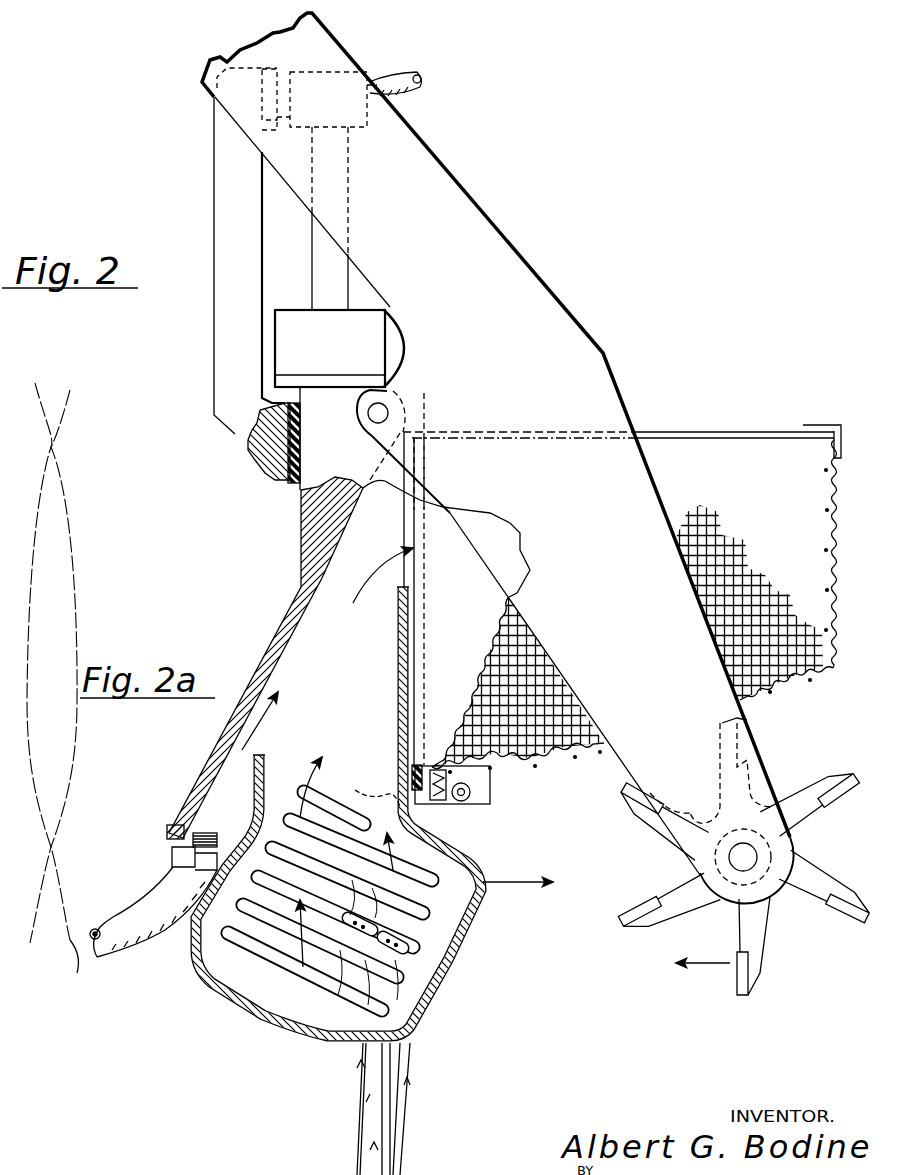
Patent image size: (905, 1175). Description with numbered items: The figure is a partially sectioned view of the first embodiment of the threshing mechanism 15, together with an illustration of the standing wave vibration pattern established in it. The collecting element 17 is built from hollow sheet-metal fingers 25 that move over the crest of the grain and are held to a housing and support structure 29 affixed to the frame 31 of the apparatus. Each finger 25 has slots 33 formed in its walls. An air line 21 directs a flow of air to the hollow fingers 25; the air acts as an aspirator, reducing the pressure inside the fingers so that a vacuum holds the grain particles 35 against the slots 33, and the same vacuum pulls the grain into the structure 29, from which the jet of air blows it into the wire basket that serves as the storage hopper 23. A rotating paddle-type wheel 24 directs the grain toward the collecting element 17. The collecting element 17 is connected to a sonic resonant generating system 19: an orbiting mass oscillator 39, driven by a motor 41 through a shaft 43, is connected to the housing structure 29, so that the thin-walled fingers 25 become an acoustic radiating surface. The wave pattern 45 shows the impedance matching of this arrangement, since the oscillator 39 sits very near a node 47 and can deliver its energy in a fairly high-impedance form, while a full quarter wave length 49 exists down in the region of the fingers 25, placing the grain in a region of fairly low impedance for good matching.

In FIG. 2, the threshing mechanism 15 is at (665, 330).
In FIG. 2, the collecting element 17 is at (443, 1008).
In FIG. 2, the sonic resonant generating system 19 is at (356, 287).
In FIG. 2, the air line 21 is at (137, 907).
In FIG. 2, the storage hopper 23 is at (830, 573).
In FIG. 2, the rotating paddle-type wheel 24 is at (760, 935).
In FIG. 2, the fingers 25 is at (327, 1040).
In FIG. 2, the housing and support structure 29 is at (265, 657).
In FIG. 2, the frame 31 is at (235, 420).
In FIG. 2, the slots 33 is at (258, 948).
In FIG. 2, the grain particles 35 is at (400, 942).
In FIG. 2, the orbiting mass oscillator 39 is at (372, 350).
In FIG. 2, the motor 41 is at (345, 77).
In FIG. 2, the shaft 43 is at (320, 250).
In FIG. 2A, the wave pattern 45 is at (63, 548).
In FIG. 2A, the node 47 is at (68, 410).
In FIG. 2A, the quarter wave length 49 is at (89, 970).